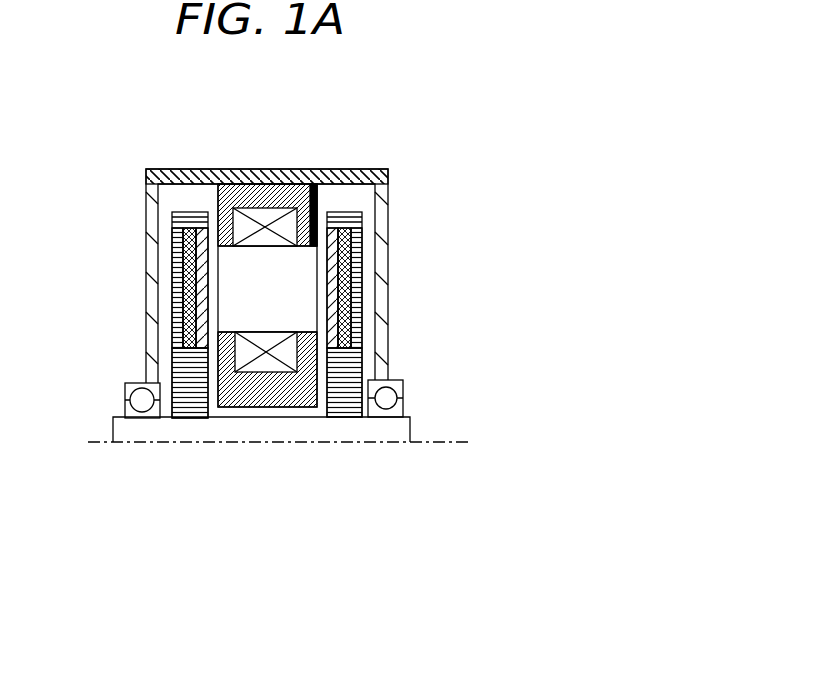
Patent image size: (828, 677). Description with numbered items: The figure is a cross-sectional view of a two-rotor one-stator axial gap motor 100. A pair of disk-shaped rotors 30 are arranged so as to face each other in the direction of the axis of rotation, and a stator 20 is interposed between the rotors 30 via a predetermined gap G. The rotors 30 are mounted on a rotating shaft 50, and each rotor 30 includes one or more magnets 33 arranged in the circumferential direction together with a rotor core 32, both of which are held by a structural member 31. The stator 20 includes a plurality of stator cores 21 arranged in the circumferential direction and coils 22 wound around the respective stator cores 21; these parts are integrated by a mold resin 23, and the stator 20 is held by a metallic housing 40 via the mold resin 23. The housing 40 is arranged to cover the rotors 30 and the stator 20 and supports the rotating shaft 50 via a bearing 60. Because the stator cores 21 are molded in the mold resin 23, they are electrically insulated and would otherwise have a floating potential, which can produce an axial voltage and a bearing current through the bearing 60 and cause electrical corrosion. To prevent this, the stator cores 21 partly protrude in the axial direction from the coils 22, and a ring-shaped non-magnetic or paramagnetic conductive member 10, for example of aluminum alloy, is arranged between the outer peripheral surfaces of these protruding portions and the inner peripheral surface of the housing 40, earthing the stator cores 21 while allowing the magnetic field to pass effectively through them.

The axial gap motor 100 is at (383, 158).
The conductive member 10 is at (320, 192).
The stator 20 is at (62, 240).
The stator cores 21 is at (234, 278).
The coils 22 is at (243, 353).
The mold resin 23 is at (232, 393).
The rotors 30 is at (468, 193).
The structural member 31 is at (352, 220).
The rotor core 32 is at (355, 270).
The magnets 33 is at (355, 324).
The housing 40 is at (148, 212).
The rotating shaft 50 is at (395, 433).
The bearing 60 is at (388, 398).
The gap G is at (213, 234).